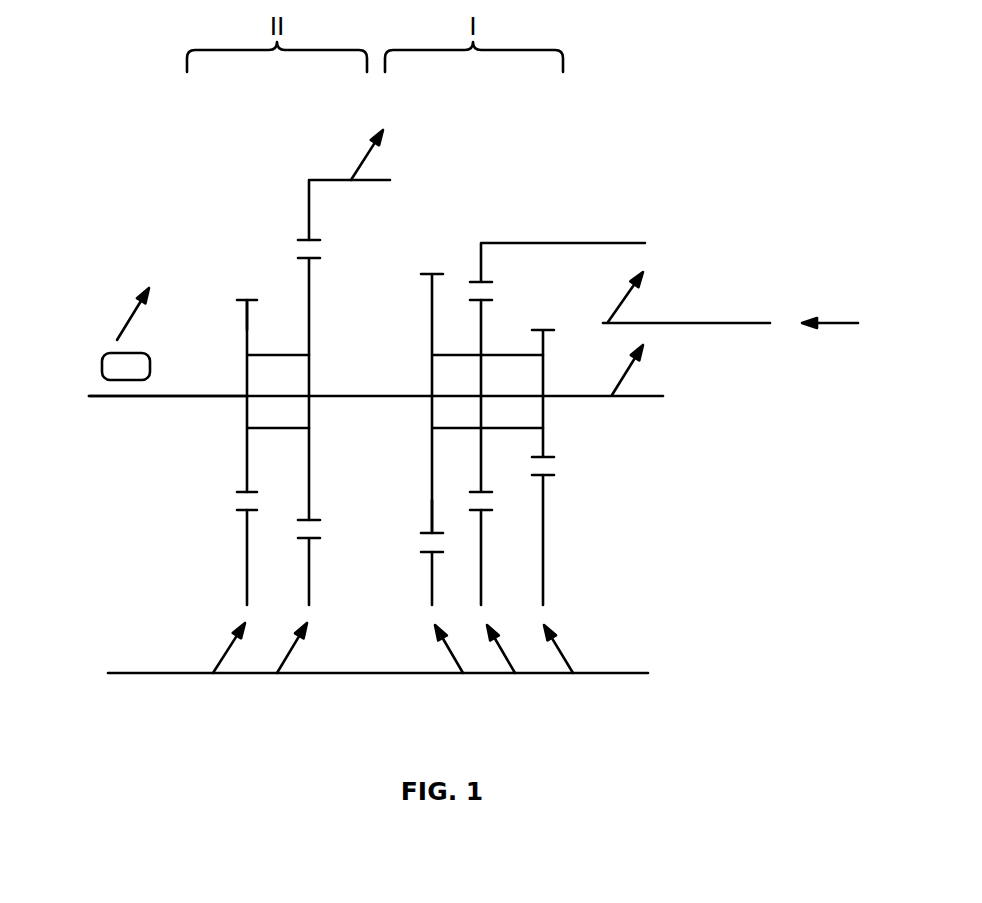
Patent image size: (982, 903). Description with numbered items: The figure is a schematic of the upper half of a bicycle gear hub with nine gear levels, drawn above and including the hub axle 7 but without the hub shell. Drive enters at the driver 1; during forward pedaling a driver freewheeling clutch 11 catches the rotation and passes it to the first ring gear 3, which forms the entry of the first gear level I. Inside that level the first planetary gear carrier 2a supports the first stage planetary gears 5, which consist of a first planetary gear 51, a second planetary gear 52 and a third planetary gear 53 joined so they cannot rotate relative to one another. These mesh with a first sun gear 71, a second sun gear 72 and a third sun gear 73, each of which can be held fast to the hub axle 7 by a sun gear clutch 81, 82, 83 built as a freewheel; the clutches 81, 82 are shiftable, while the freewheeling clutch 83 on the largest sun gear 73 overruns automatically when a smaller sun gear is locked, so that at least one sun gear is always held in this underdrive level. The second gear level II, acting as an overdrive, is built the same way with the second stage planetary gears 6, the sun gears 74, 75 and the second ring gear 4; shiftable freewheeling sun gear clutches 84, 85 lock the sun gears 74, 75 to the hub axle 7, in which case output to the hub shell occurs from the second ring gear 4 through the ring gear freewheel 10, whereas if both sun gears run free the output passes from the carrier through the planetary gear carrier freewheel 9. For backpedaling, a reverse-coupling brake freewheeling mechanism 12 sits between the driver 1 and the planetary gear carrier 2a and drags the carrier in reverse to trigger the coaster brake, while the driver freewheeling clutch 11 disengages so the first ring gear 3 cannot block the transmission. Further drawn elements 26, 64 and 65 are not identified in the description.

The driver 1 is at (742, 322).
The first planetary gear carrier 2a is at (648, 397).
The first ring gear 3 is at (544, 243).
The second ring gear 4 is at (385, 180).
The first stage planetary gears 5 is at (430, 378).
The second stage planetary gears 6 is at (245, 380).
The hub axle 7 is at (634, 672).
The planetary gear carrier freewheel 9 is at (127, 323).
The ring gear freewheel 10 is at (360, 165).
The driver freewheeling clutch 11 is at (623, 300).
The reverse-coupling brake freewheeling mechanism 12 is at (628, 382).
The output shaft 26 is at (163, 398).
The first planetary gear 51 is at (430, 488).
The second planetary gear 52 is at (478, 443).
The third planetary gear 53 is at (545, 445).
The first clutch of second gear set 64 is at (245, 328).
The second clutch of second gear set 65 is at (308, 285).
The first sun gear 71 is at (430, 578).
The second sun gear 72 is at (483, 548).
The third sun gear 73 is at (545, 520).
The sun gear 74 is at (245, 527).
The sun gear 75 is at (308, 557).
The sun gear clutch 81 is at (452, 658).
The sun gear clutch 82 is at (505, 658).
The freewheeling clutch 83 is at (563, 658).
The sun gear clutch 84 is at (224, 655).
The sun gear clutch 85 is at (288, 657).